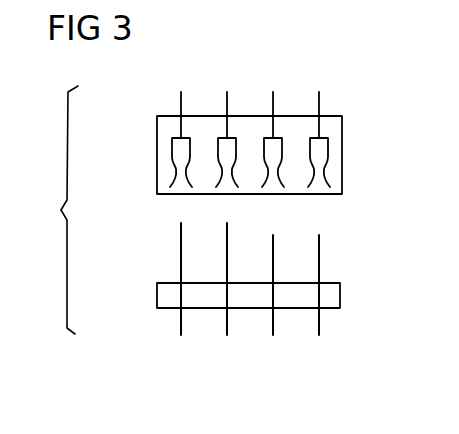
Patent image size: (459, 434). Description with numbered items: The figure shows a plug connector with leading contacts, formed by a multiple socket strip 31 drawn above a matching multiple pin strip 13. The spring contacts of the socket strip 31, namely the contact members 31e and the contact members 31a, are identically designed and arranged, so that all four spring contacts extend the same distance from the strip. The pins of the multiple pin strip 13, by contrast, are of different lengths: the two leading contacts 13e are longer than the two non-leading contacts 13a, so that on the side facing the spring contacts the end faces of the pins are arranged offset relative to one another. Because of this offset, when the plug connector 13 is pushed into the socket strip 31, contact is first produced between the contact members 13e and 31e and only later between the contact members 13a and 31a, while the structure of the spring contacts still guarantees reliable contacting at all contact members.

The multiple socket strip 31 is at (158, 152).
The contact members 31e is at (181, 100).
The contact members 31a is at (273, 100).
The plug connector 13 is at (168, 297).
The leading contacts 13e is at (181, 318).
The non-leading contacts 13a is at (273, 318).